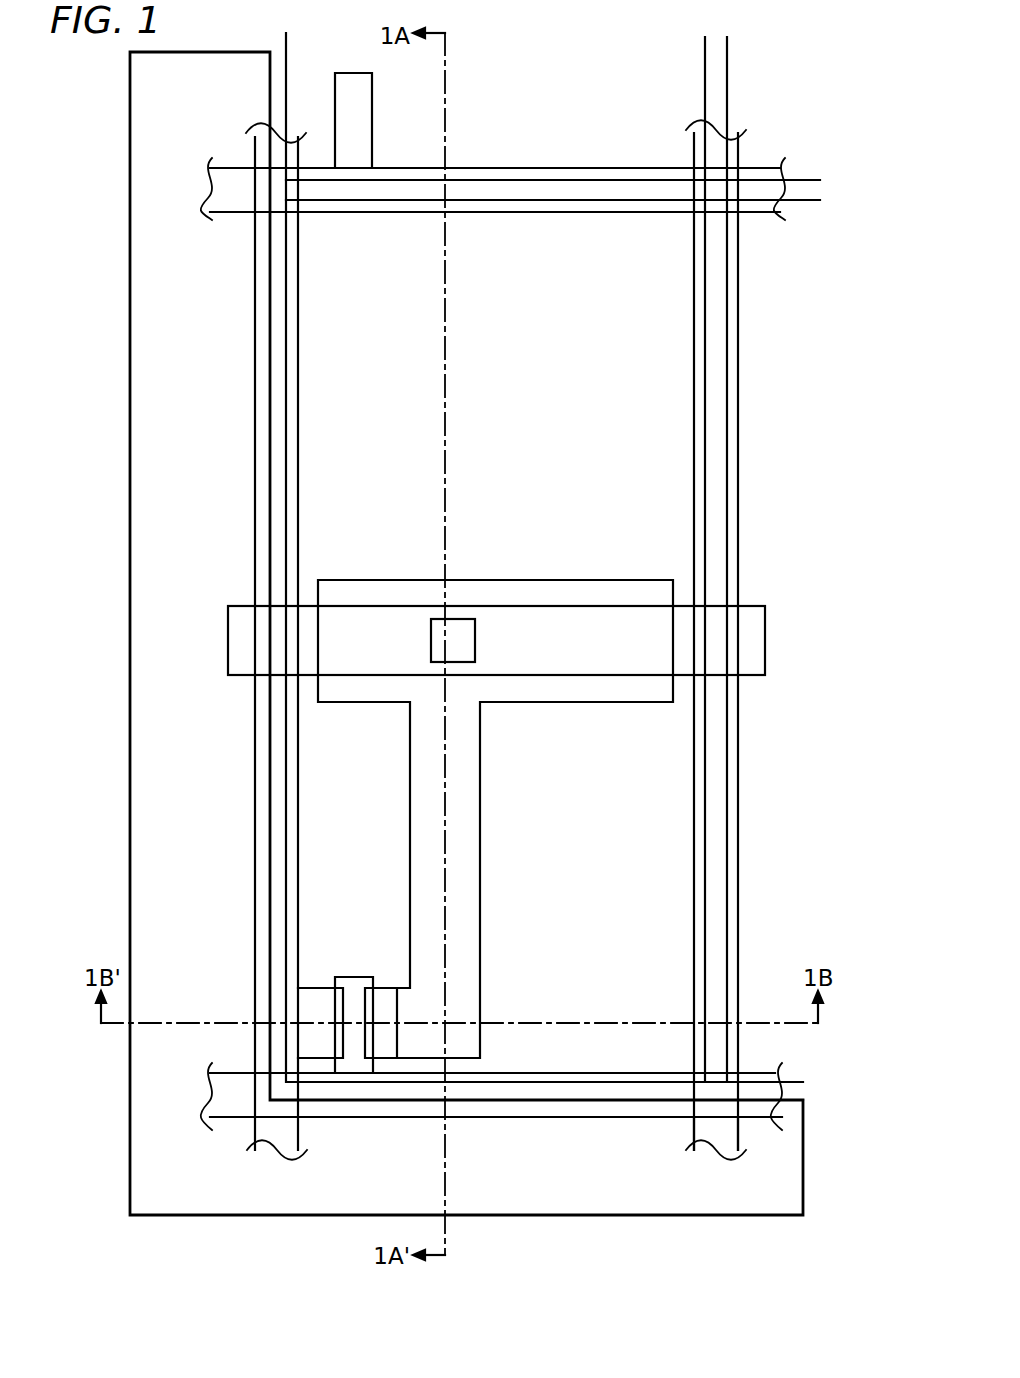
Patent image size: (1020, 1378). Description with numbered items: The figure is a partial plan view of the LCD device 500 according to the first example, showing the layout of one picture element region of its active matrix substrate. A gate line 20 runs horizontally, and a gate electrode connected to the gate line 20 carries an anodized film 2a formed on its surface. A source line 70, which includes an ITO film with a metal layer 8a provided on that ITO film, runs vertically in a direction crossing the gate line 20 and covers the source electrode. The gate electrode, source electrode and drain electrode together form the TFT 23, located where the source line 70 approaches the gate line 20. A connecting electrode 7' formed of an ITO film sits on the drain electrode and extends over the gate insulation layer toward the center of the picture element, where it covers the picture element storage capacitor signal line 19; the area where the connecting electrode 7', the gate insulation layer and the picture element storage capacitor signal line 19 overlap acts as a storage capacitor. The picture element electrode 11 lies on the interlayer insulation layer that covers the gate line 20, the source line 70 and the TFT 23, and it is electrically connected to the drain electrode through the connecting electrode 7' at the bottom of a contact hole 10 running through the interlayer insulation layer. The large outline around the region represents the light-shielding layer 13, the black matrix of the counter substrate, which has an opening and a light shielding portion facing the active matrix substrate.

The light-shielding layer 13 is at (220, 68).
The source line 70 is at (268, 478).
The picture element electrode 11 is at (667, 380).
The metal layer 8a is at (722, 1143).
The anodized film 2a is at (350, 85).
The picture element storage capacitor signal line 19 is at (752, 645).
The connecting electrode 7' is at (550, 819).
The contact hole 10 is at (461, 631).
The TFT 23 is at (344, 971).
The gate line 20 is at (765, 1092).
The LCD device 500 is at (916, 1118).